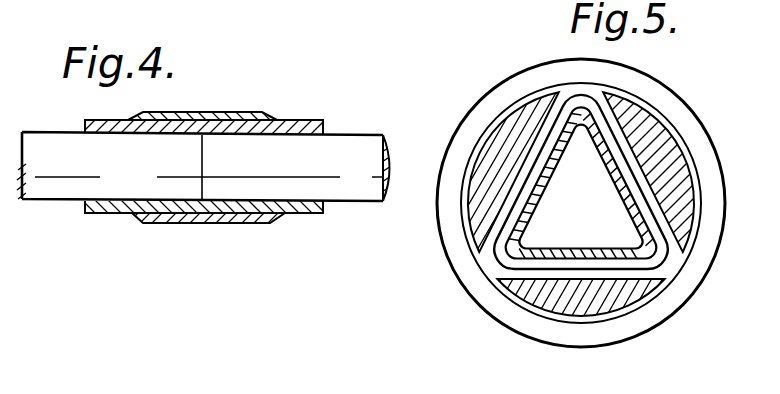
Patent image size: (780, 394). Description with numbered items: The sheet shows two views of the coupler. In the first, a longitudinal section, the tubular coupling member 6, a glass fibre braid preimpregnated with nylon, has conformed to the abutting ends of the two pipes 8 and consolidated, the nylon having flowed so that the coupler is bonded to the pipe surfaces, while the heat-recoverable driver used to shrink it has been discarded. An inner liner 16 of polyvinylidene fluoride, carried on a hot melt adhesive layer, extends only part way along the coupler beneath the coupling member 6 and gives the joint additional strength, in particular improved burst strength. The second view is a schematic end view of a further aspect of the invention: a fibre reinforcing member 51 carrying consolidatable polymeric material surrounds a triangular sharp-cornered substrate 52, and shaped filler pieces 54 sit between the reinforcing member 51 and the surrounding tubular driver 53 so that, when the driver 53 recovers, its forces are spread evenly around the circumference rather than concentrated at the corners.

In FIG. 4, the pipes 8 is at (43, 148).
In FIG. 4, the tubular coupling member 6 is at (277, 120).
In FIG. 4, the inner liner 16 is at (230, 113).
In FIG. 5, the tubular driver 53 is at (668, 90).
In FIG. 5, the filler pieces 54 is at (515, 107).
In FIG. 5, the sharp-cornered substrate 52 is at (520, 210).
In FIG. 5, the fibre reinforcing member 51 is at (497, 258).